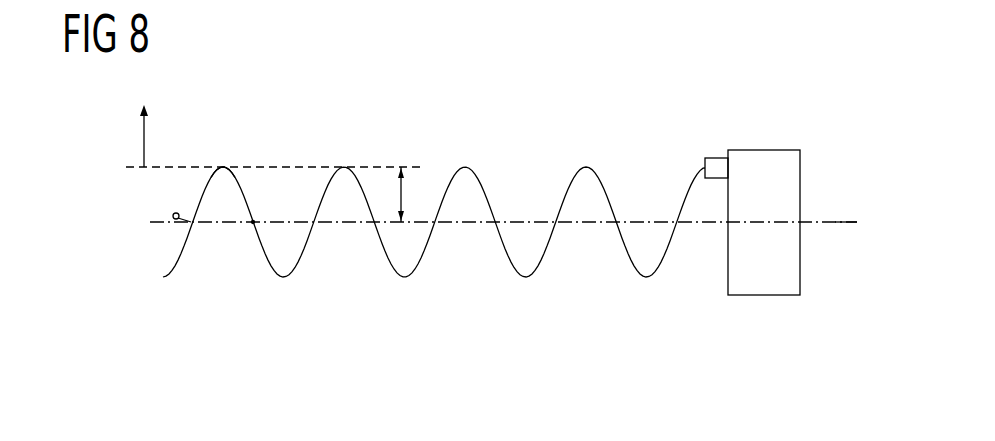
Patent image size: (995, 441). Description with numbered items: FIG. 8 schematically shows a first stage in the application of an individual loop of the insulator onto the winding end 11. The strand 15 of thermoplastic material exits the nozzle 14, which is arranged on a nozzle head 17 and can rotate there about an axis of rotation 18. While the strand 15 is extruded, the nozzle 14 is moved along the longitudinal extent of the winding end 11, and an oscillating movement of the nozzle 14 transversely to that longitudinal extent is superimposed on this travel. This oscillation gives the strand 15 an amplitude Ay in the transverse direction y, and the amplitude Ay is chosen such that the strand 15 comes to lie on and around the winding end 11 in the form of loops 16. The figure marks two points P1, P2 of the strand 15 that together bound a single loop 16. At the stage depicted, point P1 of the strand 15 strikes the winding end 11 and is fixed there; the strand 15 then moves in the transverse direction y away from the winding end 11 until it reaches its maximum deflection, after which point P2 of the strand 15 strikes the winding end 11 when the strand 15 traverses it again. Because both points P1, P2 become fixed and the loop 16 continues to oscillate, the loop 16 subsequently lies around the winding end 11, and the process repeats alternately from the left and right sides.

The winding end 11 is at (124, 218).
The nozzle 14 is at (713, 158).
The strand 15 is at (467, 166).
The loop 16 is at (223, 167).
The nozzle head 17 is at (764, 150).
The axis of rotation 18 is at (848, 222).
The first point of the strand P1 is at (192, 220).
The second point of the strand P2 is at (254, 220).
The amplitude in the transverse direction Ay is at (402, 195).
The transverse direction y is at (144, 137).